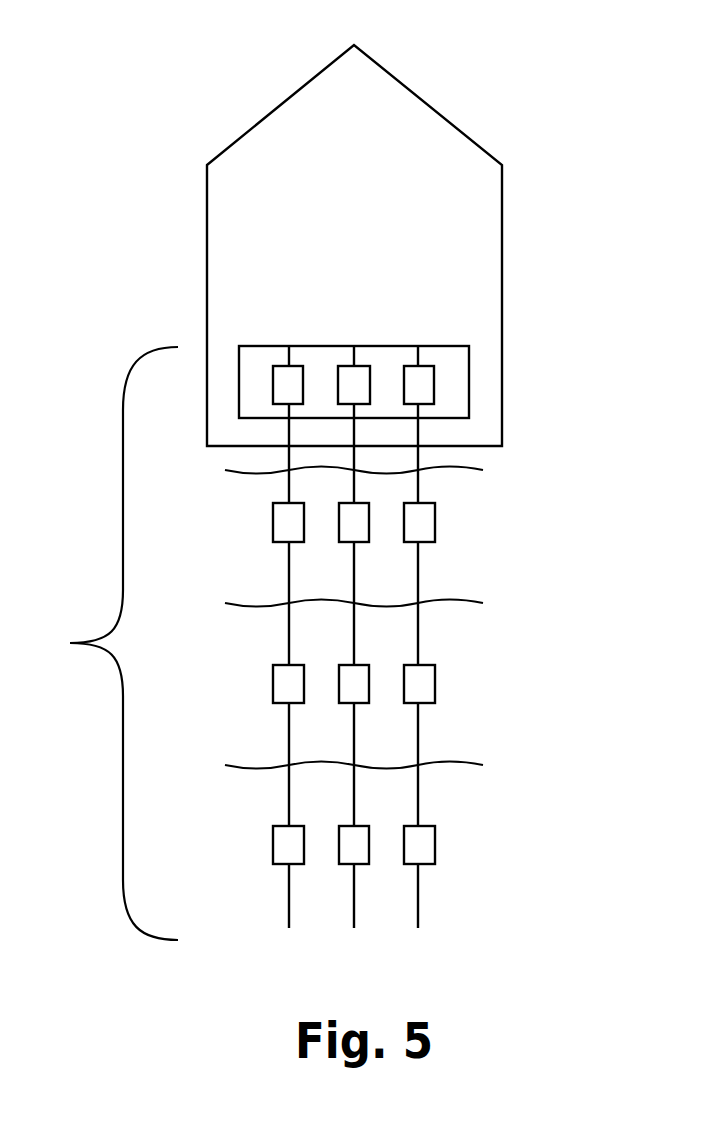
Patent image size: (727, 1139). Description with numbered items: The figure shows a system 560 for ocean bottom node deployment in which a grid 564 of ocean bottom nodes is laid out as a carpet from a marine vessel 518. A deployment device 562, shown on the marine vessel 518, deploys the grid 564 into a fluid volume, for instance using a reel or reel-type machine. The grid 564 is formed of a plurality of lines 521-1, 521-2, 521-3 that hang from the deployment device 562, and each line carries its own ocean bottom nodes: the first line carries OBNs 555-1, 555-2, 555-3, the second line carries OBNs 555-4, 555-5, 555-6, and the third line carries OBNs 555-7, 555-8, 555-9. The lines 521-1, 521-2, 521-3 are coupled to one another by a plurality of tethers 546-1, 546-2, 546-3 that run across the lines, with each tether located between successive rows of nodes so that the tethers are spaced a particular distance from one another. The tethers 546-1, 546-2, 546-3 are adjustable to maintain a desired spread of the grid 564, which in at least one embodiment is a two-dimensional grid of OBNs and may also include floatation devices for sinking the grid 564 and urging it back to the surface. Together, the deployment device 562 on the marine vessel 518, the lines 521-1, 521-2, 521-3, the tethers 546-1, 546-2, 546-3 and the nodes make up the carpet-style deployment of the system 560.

The system 560 is at (495, 66).
The marine vessel 518 is at (502, 221).
The deployment device 562 is at (469, 383).
The line 521-1 is at (289, 912).
The line 521-2 is at (354, 915).
The line 521-3 is at (418, 912).
The tether 546-1 is at (455, 472).
The tether 546-2 is at (455, 605).
The tether 546-3 is at (452, 767).
The OBN 555-1 is at (273, 525).
The OBN 555-2 is at (273, 686).
The OBN 555-3 is at (273, 847).
The OBN 555-4 is at (369, 521).
The OBN 555-5 is at (369, 683).
The OBN 555-6 is at (369, 844).
The OBN 555-7 is at (435, 525).
The OBN 555-8 is at (435, 686).
The OBN 555-9 is at (435, 847).
The grid 564 is at (104, 643).